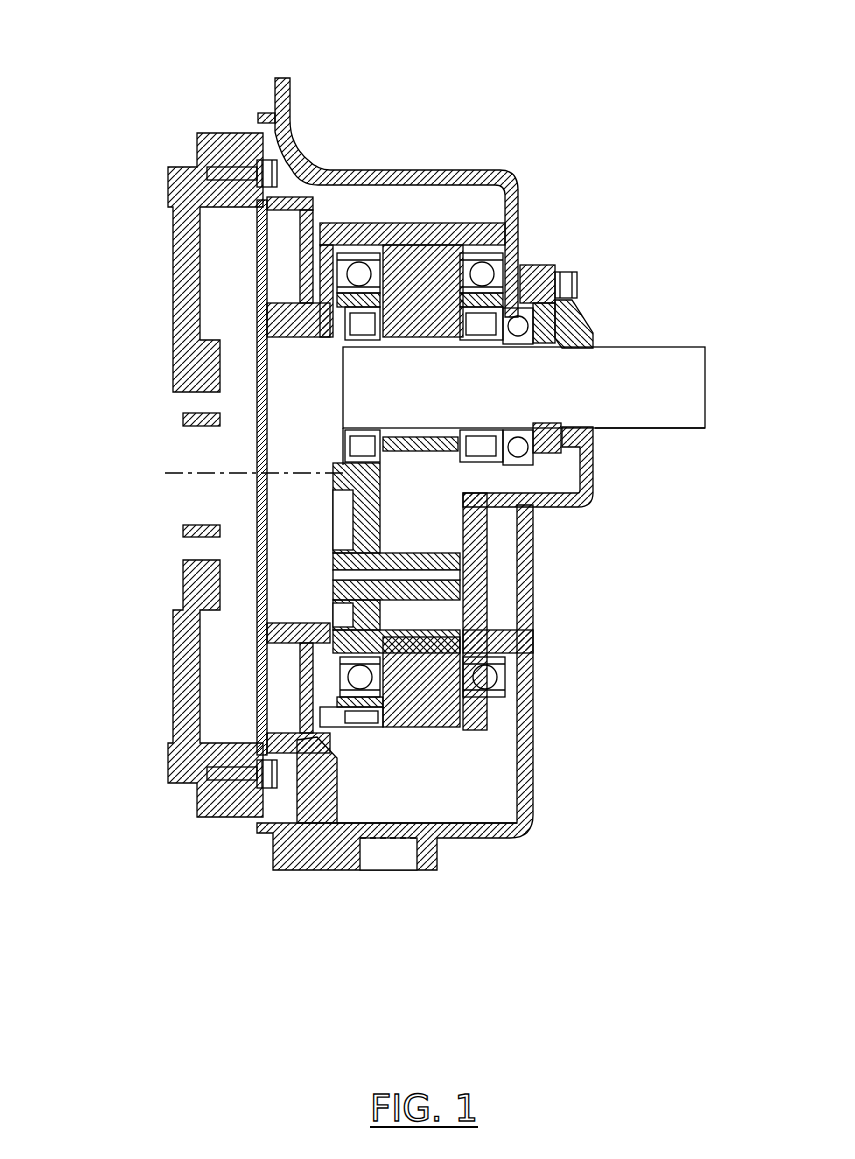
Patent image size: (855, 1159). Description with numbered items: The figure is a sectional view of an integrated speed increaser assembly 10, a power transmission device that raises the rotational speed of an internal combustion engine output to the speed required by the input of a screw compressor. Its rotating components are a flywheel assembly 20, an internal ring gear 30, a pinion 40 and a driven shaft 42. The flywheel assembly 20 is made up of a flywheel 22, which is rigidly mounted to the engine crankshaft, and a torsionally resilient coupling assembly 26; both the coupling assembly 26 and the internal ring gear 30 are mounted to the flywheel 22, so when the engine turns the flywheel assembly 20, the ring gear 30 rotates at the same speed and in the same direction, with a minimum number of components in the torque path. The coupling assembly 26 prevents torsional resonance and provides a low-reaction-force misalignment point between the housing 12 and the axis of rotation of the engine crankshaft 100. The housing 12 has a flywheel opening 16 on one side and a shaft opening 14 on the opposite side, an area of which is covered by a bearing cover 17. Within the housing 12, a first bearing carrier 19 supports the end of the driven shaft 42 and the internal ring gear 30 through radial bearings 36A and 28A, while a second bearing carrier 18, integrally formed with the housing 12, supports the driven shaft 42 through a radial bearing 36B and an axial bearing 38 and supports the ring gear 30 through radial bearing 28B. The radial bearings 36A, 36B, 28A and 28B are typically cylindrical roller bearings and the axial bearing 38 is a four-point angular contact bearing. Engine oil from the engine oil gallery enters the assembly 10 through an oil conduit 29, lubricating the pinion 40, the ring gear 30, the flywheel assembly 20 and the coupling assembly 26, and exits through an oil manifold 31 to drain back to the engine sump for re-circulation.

The integrated speed increaser assembly 10 is at (140, 73).
The housing 12 is at (377, 170).
The shaft opening 14 is at (735, 255).
The flywheel opening 16 is at (150, 117).
The bearing cover 17 is at (577, 313).
The second bearing carrier 18 is at (530, 268).
The first bearing carrier 19 is at (382, 497).
The flywheel assembly 20 is at (345, 75).
The flywheel 22 is at (175, 245).
The torsionally resilient coupling assembly 26 is at (283, 195).
The radial bearing 28A is at (377, 725).
The radial bearing 28B is at (503, 693).
The oil conduit 29 is at (457, 573).
The internal ring gear 30 is at (465, 787).
The oil manifold 31 is at (383, 858).
The radial bearing 36A is at (343, 442).
The radial bearing 36B is at (522, 508).
The axial bearing 38 is at (582, 452).
The pinion 40 is at (403, 467).
The driven shaft 42 is at (658, 428).
The axis of rotation of the engine crankshaft 100 is at (172, 473).